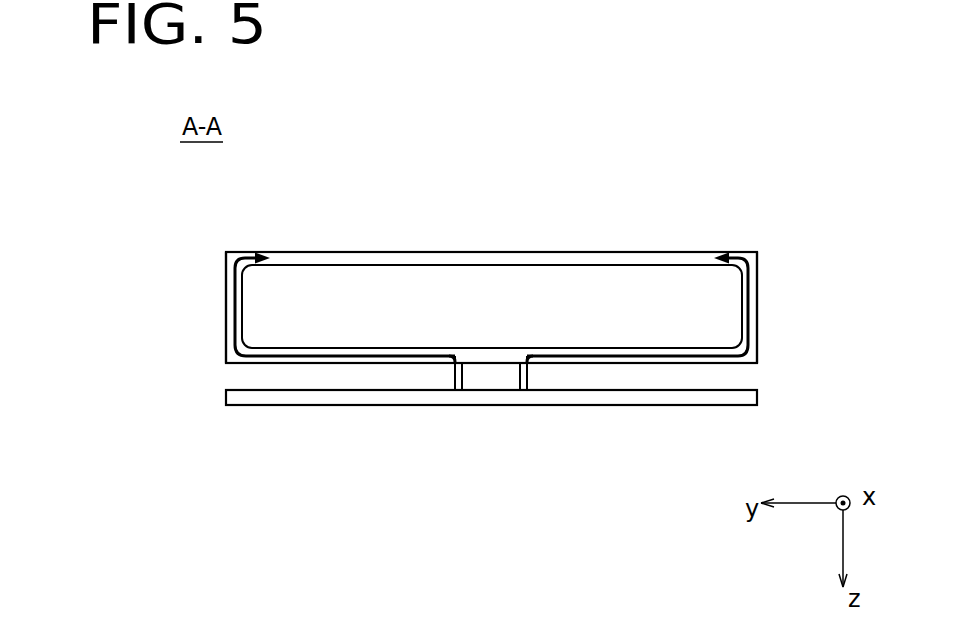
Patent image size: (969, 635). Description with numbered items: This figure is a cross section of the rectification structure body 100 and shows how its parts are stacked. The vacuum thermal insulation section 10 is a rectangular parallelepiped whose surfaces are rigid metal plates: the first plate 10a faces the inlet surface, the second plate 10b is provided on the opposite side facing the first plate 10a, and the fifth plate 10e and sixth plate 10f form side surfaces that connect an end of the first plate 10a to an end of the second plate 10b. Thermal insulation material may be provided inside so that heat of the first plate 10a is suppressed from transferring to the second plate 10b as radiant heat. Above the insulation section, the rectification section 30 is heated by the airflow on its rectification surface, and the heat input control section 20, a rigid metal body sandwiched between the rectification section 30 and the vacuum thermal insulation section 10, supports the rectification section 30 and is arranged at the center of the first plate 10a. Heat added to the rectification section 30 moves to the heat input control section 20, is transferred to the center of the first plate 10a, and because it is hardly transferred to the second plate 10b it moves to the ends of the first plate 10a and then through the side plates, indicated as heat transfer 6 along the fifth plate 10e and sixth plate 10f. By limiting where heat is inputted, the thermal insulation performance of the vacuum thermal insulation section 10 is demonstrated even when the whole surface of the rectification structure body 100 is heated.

The rectification structure body 100 is at (735, 181).
The vacuum thermal insulation section 10 is at (413, 287).
The first plate 10a is at (733, 362).
The second plate 10b is at (633, 252).
The fifth plate 10e is at (228, 270).
The sixth plate 10f is at (757, 322).
The heat transfer 6 is at (231, 342).
The heat input control section 20 is at (493, 380).
The rectification section 30 is at (250, 397).